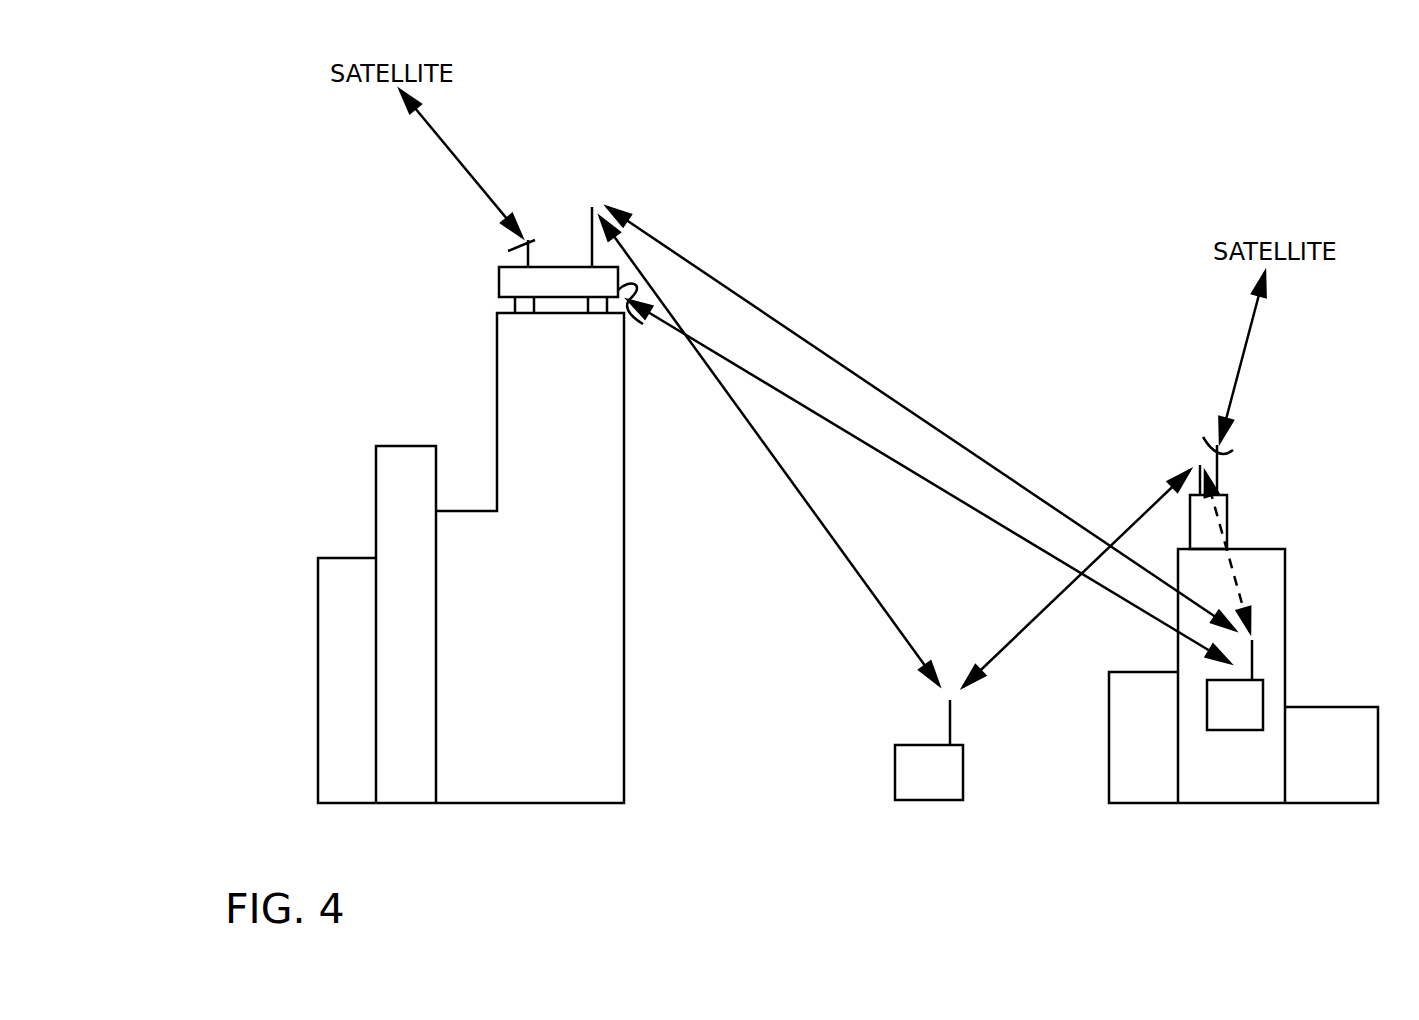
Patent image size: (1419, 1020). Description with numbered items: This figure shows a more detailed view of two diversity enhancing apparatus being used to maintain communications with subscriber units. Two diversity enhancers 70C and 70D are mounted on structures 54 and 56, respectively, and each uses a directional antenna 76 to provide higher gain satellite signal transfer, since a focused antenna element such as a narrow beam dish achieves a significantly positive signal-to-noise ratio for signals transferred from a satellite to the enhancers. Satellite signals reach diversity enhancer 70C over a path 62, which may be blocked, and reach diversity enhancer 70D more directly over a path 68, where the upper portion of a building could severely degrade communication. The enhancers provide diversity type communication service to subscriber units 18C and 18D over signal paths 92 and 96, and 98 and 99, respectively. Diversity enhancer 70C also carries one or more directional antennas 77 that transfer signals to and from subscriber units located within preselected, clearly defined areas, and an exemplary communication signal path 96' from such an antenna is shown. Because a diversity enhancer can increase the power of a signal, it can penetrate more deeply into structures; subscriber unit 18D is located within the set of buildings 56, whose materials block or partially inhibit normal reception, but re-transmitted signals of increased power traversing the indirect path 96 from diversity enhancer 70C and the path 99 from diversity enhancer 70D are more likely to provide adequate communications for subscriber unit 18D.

The structure 54 is at (532, 803).
The buildings 56 is at (1228, 803).
The diversity enhancer 70C is at (500, 280).
The diversity enhancer 70D is at (1227, 507).
The directional antenna 76 is at (532, 240).
The directional antenna 77 is at (638, 321).
The blocked path 62 is at (475, 187).
The path 68 is at (1242, 357).
The signal path 92 is at (836, 550).
The signal path 96 is at (921, 418).
The communication signal path 96' is at (929, 481).
The signal path 98 is at (1033, 623).
The path 99 is at (1241, 598).
The subscriber unit 18C is at (925, 800).
The subscriber unit 18D is at (1263, 693).